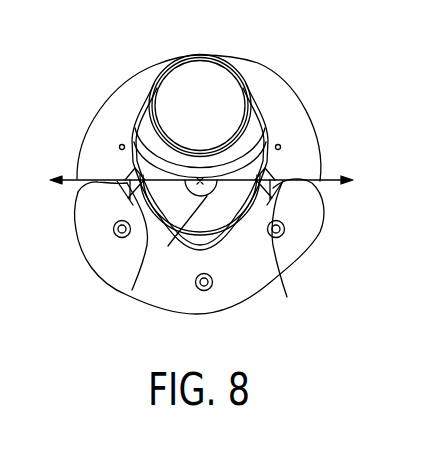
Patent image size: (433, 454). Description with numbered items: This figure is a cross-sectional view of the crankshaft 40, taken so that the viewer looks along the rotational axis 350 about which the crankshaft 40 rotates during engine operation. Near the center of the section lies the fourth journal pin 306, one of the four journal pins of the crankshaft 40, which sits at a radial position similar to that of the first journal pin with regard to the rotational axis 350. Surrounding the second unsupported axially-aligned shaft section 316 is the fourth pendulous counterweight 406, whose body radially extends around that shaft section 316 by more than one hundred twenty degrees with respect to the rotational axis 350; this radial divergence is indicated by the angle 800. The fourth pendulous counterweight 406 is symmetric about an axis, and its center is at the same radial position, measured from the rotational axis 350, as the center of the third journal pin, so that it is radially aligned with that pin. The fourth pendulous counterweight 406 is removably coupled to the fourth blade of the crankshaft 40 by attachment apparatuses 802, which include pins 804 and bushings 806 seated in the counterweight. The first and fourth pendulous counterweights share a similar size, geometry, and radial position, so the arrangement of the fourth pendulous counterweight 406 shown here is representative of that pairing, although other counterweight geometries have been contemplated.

The crankshaft 40 is at (350, 108).
The fourth journal pin 306 is at (215, 113).
The rotational axis 350 is at (200, 180).
The angle 800 is at (190, 196).
The attachment apparatuses 802 is at (115, 250).
The pins 804 is at (115, 224).
The bushings 806 is at (116, 236).
The second unsupported axially-aligned shaft section 316 is at (132, 290).
The fourth pendulous counterweight 406 is at (287, 297).